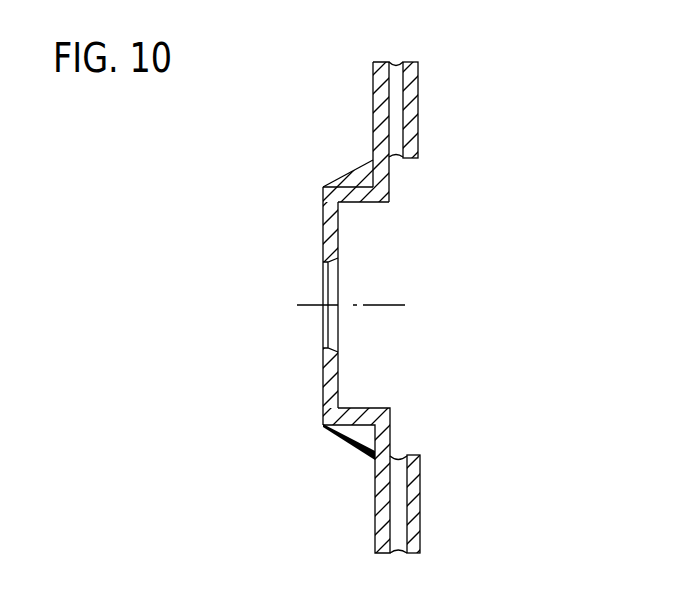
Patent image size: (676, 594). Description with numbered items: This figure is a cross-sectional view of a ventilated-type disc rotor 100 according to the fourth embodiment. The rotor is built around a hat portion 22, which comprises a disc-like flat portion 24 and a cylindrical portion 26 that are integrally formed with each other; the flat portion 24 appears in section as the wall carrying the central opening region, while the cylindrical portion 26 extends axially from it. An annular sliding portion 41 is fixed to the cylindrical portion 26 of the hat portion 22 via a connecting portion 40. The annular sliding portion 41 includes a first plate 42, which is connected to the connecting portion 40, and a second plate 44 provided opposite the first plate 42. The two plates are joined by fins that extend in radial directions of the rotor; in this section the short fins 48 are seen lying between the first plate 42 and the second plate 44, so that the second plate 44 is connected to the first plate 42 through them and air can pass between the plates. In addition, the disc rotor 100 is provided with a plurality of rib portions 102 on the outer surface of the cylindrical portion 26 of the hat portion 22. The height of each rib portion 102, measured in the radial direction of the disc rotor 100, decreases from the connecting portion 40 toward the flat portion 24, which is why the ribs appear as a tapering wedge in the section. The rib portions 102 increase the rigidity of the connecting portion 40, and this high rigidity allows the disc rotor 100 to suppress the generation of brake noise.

The hat portion 22 is at (325, 386).
The flat portion 24 is at (337, 232).
The cylindrical portion 26 is at (363, 197).
The connecting portion 40 is at (385, 180).
The annular sliding portion 41 is at (425, 503).
The first plate 42 is at (378, 88).
The second plate 44 is at (412, 87).
The short fins 48 is at (391, 63).
The disc rotor 100 is at (428, 133).
The rib portions 102 is at (351, 177).